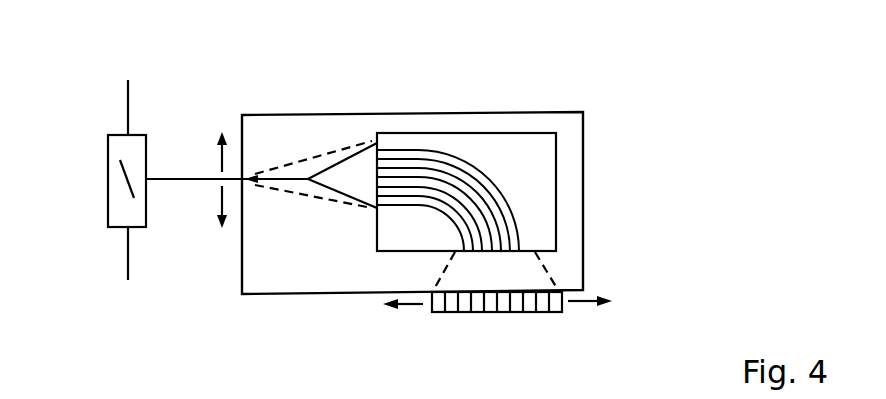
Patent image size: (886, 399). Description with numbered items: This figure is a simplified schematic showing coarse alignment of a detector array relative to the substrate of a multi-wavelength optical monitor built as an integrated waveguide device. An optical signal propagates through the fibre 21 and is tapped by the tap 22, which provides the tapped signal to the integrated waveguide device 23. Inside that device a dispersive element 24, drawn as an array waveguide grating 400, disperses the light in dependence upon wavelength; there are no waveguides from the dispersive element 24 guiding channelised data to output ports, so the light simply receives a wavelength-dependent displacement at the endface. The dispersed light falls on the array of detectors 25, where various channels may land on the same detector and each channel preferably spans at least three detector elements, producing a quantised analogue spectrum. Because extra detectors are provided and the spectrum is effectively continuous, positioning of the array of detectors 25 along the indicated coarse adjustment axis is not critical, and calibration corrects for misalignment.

The fibre 21 is at (128, 100).
The tap 22 is at (108, 152).
The integrated waveguide device 23 is at (440, 114).
The dispersive element 24 is at (501, 133).
The array waveguide grating 400 is at (478, 188).
The array of detectors 25 is at (565, 310).